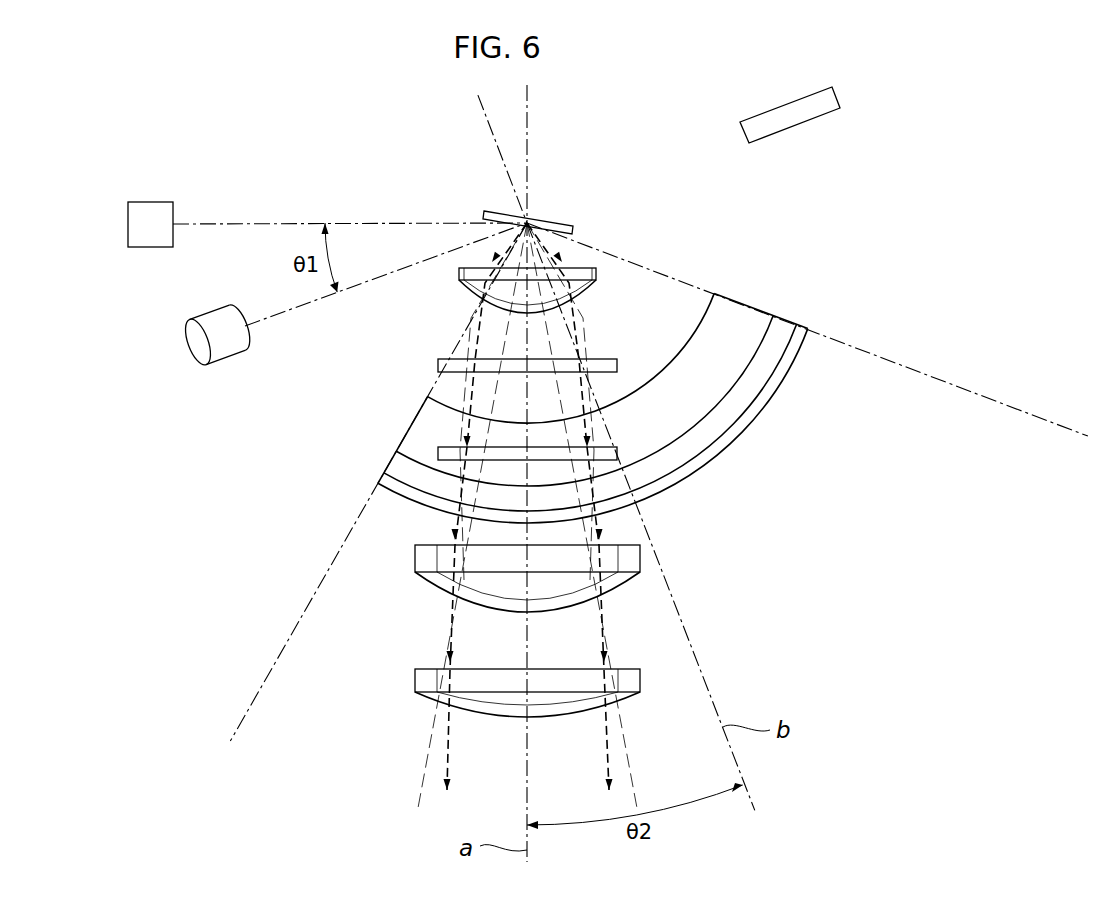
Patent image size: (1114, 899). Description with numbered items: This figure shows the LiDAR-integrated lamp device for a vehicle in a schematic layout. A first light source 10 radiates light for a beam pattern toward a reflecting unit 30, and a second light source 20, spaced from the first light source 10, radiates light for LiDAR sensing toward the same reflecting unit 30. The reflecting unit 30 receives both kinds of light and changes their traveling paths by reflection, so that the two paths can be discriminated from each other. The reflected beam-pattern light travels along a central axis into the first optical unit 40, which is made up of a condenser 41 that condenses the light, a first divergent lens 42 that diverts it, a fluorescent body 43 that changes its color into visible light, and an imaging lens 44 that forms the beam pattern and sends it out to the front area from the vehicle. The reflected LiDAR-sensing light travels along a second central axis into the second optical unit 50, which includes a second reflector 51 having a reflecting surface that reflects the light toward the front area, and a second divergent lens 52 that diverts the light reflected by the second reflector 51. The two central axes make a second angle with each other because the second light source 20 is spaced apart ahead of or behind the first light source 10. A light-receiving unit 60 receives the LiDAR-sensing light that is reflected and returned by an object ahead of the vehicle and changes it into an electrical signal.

The first light source 10 is at (137, 224).
The second light source 20 is at (196, 344).
The reflecting unit 30 is at (558, 226).
The first optical unit 40 is at (402, 492).
The condenser 41 is at (460, 280).
The first divergent lens 42 is at (456, 372).
The fluorescent body 43 is at (457, 460).
The imaging lens 44 is at (434, 631).
The second optical unit 50 is at (650, 365).
The second reflector 51 is at (748, 320).
The second divergent lens 52 is at (800, 333).
The light-receiving unit 60 is at (836, 100).